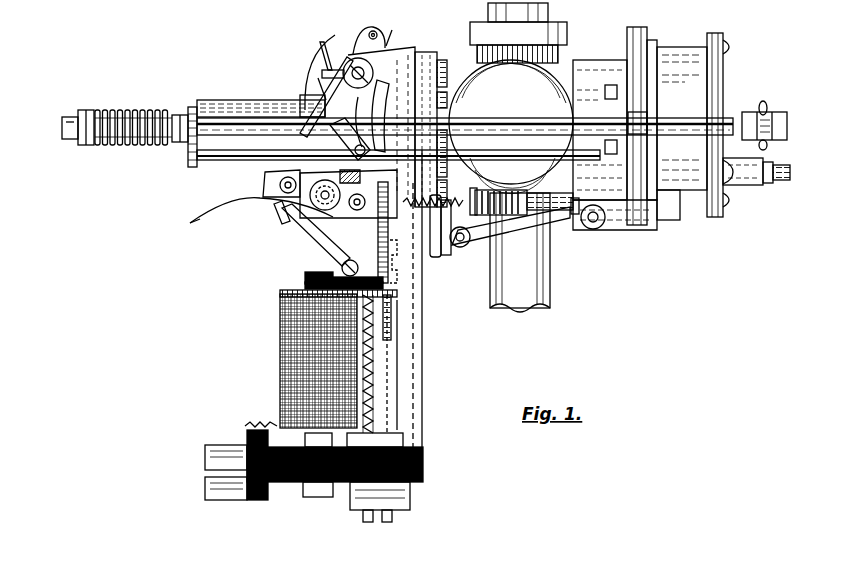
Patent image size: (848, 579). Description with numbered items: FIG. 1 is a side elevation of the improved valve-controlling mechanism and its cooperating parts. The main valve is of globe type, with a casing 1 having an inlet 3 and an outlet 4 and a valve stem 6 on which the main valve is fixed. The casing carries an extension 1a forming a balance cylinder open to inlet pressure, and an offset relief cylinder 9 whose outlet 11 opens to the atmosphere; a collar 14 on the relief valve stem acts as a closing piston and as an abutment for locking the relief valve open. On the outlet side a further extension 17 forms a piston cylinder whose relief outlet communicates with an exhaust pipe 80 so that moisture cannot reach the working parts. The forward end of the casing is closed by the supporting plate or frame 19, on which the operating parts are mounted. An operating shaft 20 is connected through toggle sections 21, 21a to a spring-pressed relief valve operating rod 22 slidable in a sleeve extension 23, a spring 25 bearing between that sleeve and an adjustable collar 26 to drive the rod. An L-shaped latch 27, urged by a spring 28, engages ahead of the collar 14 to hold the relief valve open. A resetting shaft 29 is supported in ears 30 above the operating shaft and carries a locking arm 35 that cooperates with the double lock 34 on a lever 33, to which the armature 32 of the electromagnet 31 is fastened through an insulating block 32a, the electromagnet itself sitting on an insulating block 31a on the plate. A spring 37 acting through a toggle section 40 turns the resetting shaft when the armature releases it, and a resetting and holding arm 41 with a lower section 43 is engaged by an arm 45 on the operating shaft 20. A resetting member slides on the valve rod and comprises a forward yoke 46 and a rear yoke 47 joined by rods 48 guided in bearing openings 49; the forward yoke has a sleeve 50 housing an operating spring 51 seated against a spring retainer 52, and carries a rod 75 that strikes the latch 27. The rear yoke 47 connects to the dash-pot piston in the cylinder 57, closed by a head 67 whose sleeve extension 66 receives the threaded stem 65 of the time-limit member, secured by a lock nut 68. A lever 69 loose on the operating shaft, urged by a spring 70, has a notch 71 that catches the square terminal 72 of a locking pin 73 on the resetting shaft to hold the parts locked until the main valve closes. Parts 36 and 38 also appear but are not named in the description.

The casing 1 is at (511, 127).
The extension forming a cylinder 1a is at (596, 62).
The inlet 3 is at (531, 306).
The outlet 4 is at (550, 12).
The valve stem 6 is at (63, 128).
The relief cylinder 9 is at (628, 230).
The outlet from relief cylinder 11 is at (596, 230).
The collar 14 is at (575, 196).
The extension forming a cylinder 17 is at (446, 72).
The supporting plate or frame 19 is at (422, 396).
The operating shaft 20 is at (328, 200).
The toggle lever 21 is at (261, 206).
The toggle lever section 21a is at (192, 223).
The relief valve operating rod 22 is at (510, 190).
The sleeve extension 23 is at (458, 248).
The spring 25 is at (495, 190).
The collar 26 is at (512, 212).
The L-shaped locking lever or latch 27 is at (468, 242).
The spring 28 is at (408, 246).
The resetting shaft 29 is at (355, 58).
The ears 30 is at (402, 50).
The electromagnet 31 is at (280, 350).
The insulating block 31a is at (290, 484).
The armature 32 is at (305, 276).
The insulating block 32a is at (280, 292).
The lever 33 is at (305, 232).
The double lock 34 is at (281, 221).
The locking arm 35 is at (340, 98).
The rod 36 is at (392, 416).
The spring 37 is at (385, 342).
The terminal 38 is at (410, 497).
The toggle section 40 is at (392, 30).
The resetting and holding arm 41 is at (372, 98).
The section of resetting arm 43 is at (350, 139).
The arm 45 is at (389, 194).
The forward yoke 46 is at (197, 107).
The rear yoke 47 is at (764, 104).
The rods 48 is at (696, 127).
The bearing openings 49 is at (628, 117).
The sleeve extension 50 is at (233, 100).
The operating spring 51 is at (128, 112).
The spring retainer 52 is at (93, 110).
The dash-pot cylinder 57 is at (675, 54).
The stem 65 is at (782, 181).
The sleeve extension 66 is at (742, 187).
The head 67 is at (724, 75).
The lock nut 68 is at (742, 185).
The lever 69 is at (308, 82).
The spring 70 is at (350, 182).
The notch 71 is at (318, 78).
The square terminal 72 is at (320, 58).
The locking pin 73 is at (338, 70).
The rod 75 is at (210, 160).
The exhaust pipe 80 is at (437, 262).